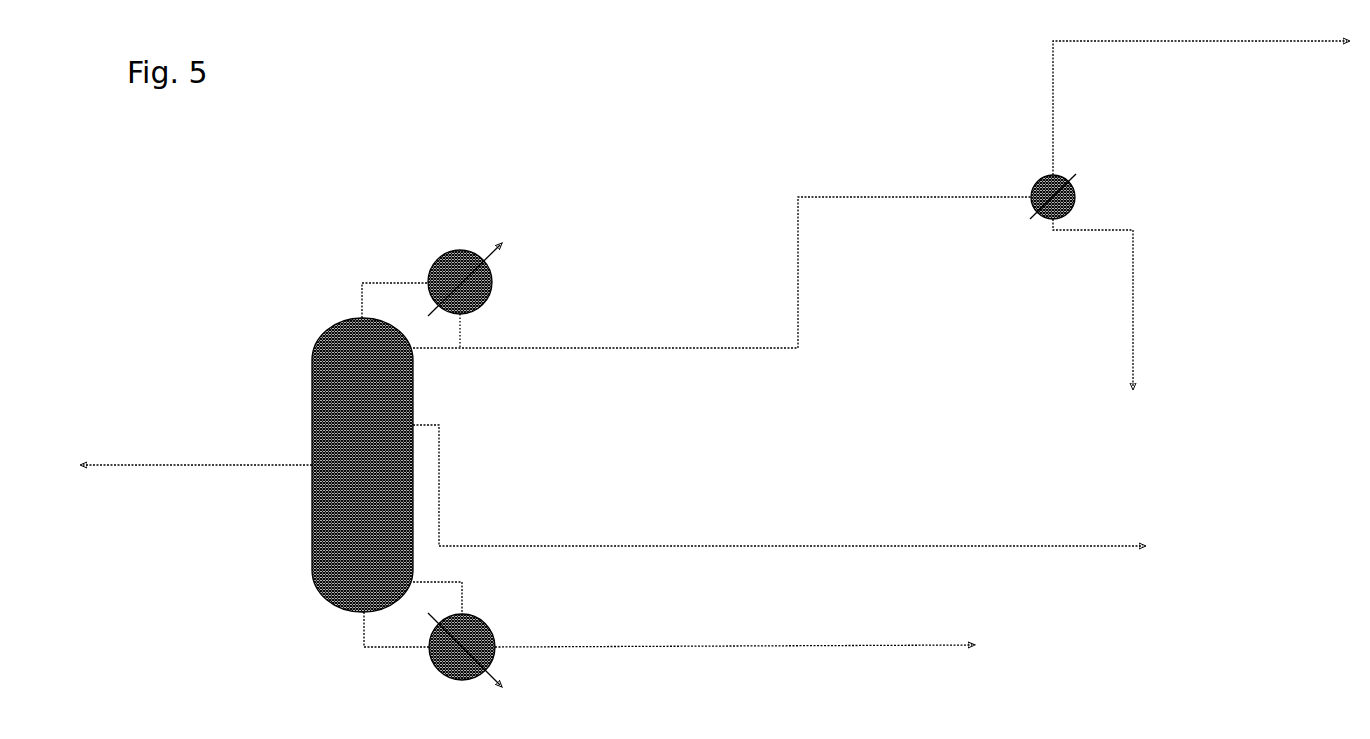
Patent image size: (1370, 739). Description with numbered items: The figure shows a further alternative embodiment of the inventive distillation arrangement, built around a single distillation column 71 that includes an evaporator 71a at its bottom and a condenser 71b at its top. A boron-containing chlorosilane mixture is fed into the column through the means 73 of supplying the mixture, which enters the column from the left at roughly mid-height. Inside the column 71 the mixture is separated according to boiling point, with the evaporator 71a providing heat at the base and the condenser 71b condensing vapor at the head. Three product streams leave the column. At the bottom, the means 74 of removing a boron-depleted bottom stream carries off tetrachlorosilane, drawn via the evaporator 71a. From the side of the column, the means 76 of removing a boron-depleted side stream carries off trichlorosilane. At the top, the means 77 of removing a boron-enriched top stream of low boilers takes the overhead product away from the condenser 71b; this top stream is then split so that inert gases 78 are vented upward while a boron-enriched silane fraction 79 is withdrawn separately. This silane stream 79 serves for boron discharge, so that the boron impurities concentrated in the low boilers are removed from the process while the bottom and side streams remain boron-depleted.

The distillation column 71 is at (303, 370).
The evaporator 71a is at (505, 632).
The condenser 71b is at (472, 246).
The means of supplying a boron-containing chlorosilane mixture 73 is at (163, 460).
The means of removing a boron-depleted bottom stream of tetrachlorosilane 74 is at (814, 643).
The means of removing a boron-depleted side stream of trichlorosilane 76 is at (778, 543).
The means of removing a boron-enriched top stream of low boilers 77 is at (638, 345).
The inert gases 78 is at (1176, 48).
The boron-enriched silane fraction 79 is at (1142, 296).